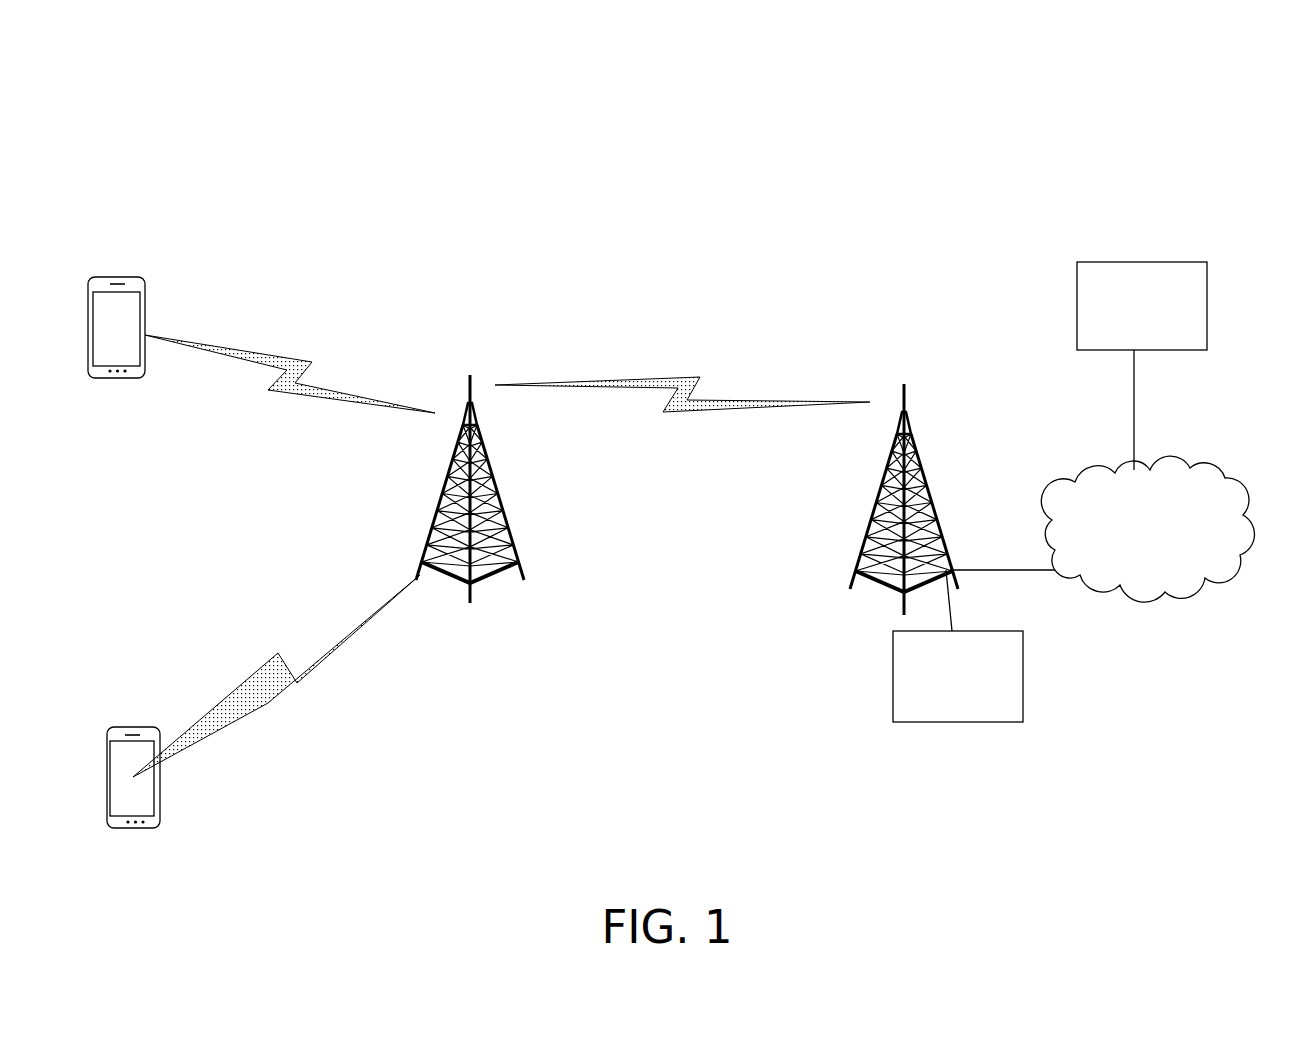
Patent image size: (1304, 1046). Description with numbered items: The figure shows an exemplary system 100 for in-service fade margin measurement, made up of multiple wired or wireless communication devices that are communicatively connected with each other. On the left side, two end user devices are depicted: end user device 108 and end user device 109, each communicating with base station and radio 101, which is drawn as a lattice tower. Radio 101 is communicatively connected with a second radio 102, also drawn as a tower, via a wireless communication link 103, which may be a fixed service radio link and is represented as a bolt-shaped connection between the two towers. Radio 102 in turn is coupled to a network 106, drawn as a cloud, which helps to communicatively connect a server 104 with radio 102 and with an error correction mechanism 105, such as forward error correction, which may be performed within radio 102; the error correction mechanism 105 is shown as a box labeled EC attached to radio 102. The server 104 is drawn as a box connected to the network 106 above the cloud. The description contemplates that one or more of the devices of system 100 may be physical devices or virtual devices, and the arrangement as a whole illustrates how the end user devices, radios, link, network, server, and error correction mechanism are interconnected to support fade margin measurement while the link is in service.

The system 100 is at (243, 117).
The base station and radio 101 is at (472, 600).
The radio 102 is at (904, 614).
The wireless communication link 103 is at (700, 377).
The server 104 is at (1121, 332).
The error correction mechanism 105 is at (937, 701).
The network 106 is at (1131, 542).
The end user device 108 is at (157, 813).
The end user device 109 is at (131, 277).